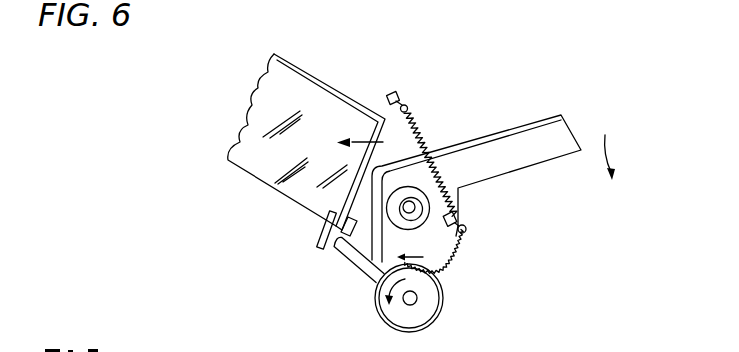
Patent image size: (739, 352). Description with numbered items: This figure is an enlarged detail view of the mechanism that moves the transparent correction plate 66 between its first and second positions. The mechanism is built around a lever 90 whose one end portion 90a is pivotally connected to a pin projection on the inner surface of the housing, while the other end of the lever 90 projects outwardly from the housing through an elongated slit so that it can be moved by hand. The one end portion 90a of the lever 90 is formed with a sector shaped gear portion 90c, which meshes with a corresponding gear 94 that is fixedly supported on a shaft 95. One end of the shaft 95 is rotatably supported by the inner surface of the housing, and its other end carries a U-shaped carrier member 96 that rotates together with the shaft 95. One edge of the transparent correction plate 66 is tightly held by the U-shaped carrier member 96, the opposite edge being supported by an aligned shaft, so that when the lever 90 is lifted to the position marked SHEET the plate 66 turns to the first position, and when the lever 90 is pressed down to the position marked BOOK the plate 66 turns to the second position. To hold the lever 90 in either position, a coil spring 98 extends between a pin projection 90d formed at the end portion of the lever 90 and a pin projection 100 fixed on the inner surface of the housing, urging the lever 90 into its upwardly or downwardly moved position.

The transparent correction plate 66 is at (270, 99).
The lever 90 is at (560, 138).
The one end portion of the lever 90a is at (417, 170).
The sector shaped gear portion 90c is at (452, 250).
The pin projection 90d is at (463, 221).
The gear 94 is at (430, 298).
The shaft 95 is at (355, 260).
The U-shaped carrier member 96 is at (317, 232).
The coil spring 98 is at (415, 168).
The pin projection 100 is at (398, 90).